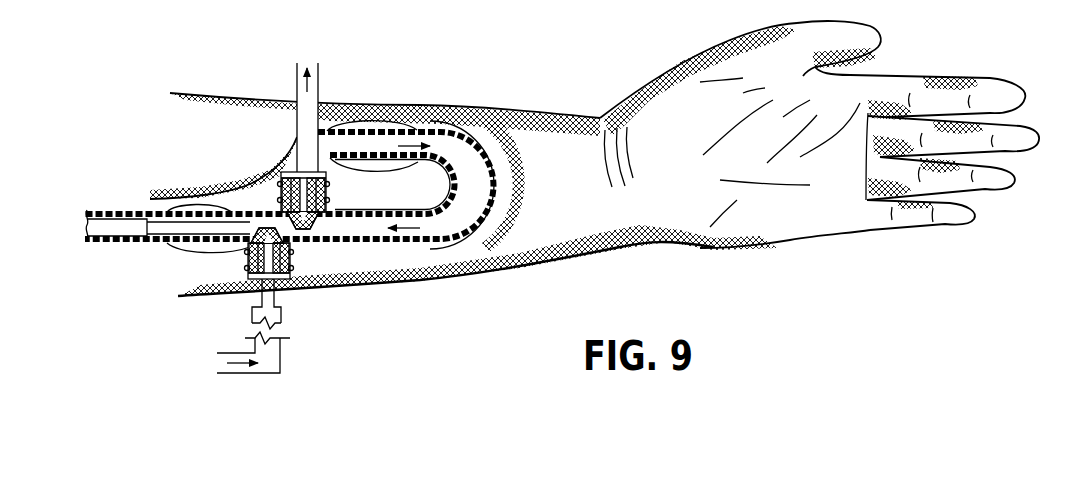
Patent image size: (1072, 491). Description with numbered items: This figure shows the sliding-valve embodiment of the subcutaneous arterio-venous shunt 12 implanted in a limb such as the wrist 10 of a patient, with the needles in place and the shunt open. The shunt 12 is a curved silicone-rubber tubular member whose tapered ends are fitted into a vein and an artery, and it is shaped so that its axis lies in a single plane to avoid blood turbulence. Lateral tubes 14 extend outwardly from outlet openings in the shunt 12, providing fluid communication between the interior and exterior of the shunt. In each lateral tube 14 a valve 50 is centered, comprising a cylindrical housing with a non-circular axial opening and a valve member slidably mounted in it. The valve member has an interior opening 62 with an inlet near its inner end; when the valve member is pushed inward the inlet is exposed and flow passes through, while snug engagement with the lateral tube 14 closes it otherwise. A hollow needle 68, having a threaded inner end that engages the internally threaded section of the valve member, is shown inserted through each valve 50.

The wrist 10 is at (608, 158).
The subcutaneous arterio-venous shunt 12 is at (474, 106).
The lateral tube 14 is at (250, 256).
The valve 50 is at (330, 192).
The interior opening 62 is at (323, 222).
The hollow needle 68 is at (319, 79).